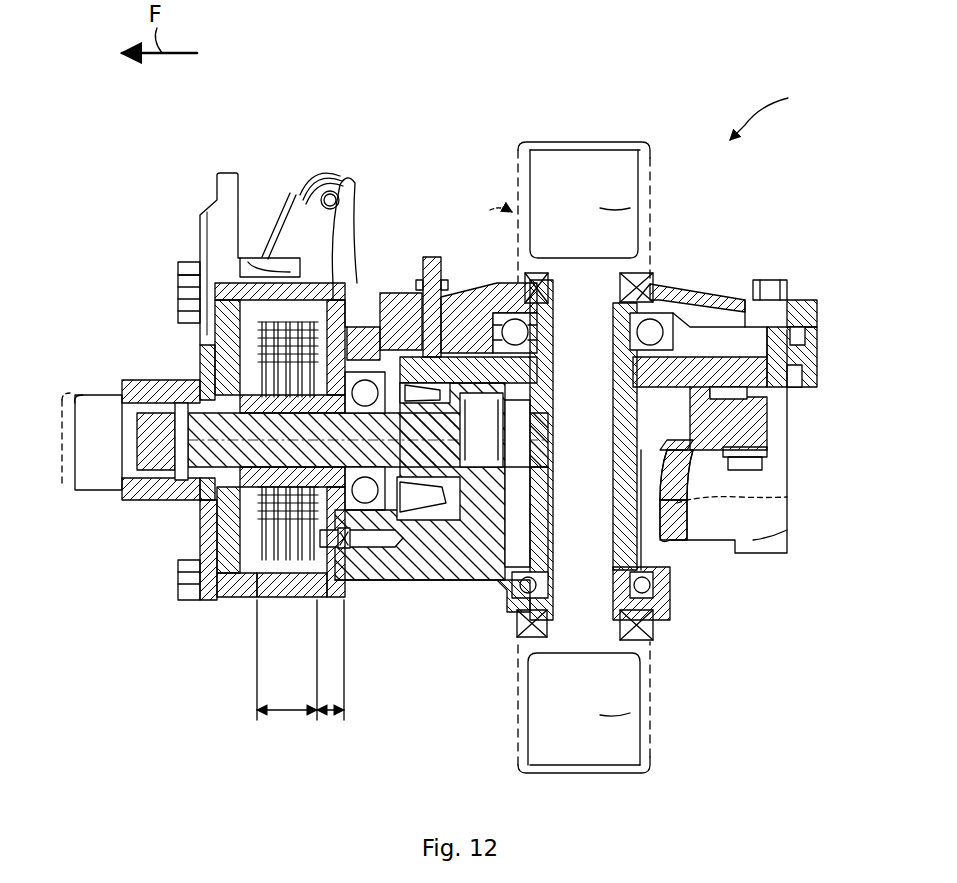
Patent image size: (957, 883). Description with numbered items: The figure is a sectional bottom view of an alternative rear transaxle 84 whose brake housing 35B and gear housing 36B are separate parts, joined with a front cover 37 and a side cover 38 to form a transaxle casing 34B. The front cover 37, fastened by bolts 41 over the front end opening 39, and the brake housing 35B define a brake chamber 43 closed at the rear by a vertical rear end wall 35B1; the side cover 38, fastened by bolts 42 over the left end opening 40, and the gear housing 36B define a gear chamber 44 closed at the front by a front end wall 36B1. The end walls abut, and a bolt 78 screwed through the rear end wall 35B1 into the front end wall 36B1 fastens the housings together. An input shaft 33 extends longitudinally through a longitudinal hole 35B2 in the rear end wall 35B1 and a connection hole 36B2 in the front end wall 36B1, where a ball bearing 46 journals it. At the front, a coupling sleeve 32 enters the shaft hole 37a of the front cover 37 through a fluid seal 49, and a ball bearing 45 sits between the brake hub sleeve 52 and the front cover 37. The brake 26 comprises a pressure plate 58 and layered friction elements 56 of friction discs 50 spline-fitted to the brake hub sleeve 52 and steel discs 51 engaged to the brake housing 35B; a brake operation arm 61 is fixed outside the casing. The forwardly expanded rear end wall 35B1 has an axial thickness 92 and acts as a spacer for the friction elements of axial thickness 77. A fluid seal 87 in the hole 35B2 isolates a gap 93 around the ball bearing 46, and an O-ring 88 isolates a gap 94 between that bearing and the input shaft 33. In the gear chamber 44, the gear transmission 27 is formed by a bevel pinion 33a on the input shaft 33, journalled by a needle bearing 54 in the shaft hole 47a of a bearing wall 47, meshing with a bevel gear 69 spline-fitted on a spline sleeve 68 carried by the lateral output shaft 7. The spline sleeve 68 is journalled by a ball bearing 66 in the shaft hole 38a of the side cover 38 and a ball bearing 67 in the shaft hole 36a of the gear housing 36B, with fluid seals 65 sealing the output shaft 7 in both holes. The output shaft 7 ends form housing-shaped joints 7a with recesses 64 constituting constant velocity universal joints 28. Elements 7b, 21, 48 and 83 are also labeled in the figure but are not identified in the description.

The output shaft 7 is at (487, 215).
The housing-shaped joints 7a is at (512, 172).
The downstream exhaust pipe portion 7b is at (512, 738).
The drive shaft side member 21 is at (70, 392).
The brake 26 is at (212, 280).
The gear transmission 27 is at (484, 285).
The constant velocity universal joints 28 is at (660, 152).
The coupling sleeve 32 is at (120, 383).
The input shaft 33 is at (135, 442).
The bevel pinion 33a is at (550, 492).
The transaxle casing 34B is at (795, 300).
The brake housing 35B is at (290, 590).
The rear end wall 35B1 is at (352, 212).
The longitudinal hole 35B2 is at (278, 252).
The shaft hole 36a is at (630, 603).
The gear housing 36B is at (444, 598).
The front end wall 36B1 is at (356, 285).
The connection hole 36B2 is at (372, 322).
The front cover 37 is at (205, 200).
The shaft hole 37a is at (200, 355).
The side cover 38 is at (720, 288).
The shaft hole 38a is at (618, 328).
The front end opening 39 is at (240, 597).
The left end opening 40 is at (790, 332).
The bolts 41 is at (180, 266).
The bolts 42 is at (768, 282).
The brake chamber 43 is at (330, 597).
The gear chamber 44 is at (680, 548).
The ball bearing 45 is at (205, 500).
The ball bearing 46 is at (430, 565).
The bearing wall 47 is at (505, 620).
The shaft hole 47a is at (545, 445).
The shaft end member 48 is at (150, 497).
The fluid seal 49 is at (176, 492).
The friction discs 50 is at (200, 548).
The steel discs 51 is at (218, 592).
The brake hub sleeve 52 is at (196, 382).
The needle bearing 54 is at (548, 462).
The layered friction elements 56 is at (270, 597).
The pressure plate 58 is at (185, 305).
The brake operation arm 61 is at (345, 178).
The recesses 64 is at (645, 212).
The fluid seal 65 is at (650, 272).
The ball bearing 66 is at (665, 322).
The ball bearing 67 is at (668, 592).
The spline sleeve 68 is at (762, 500).
The bevel gear 69 is at (770, 448).
The axial thickness 77 is at (290, 712).
The bolt 78 is at (375, 565).
The lower seal 83 is at (125, 492).
The rear transaxle 84 is at (772, 106).
The fluid seal 87 is at (358, 565).
The O-ring 88 is at (388, 570).
The axial thickness 92 is at (332, 712).
The gap 93 is at (542, 368).
The gap 94 is at (545, 400).